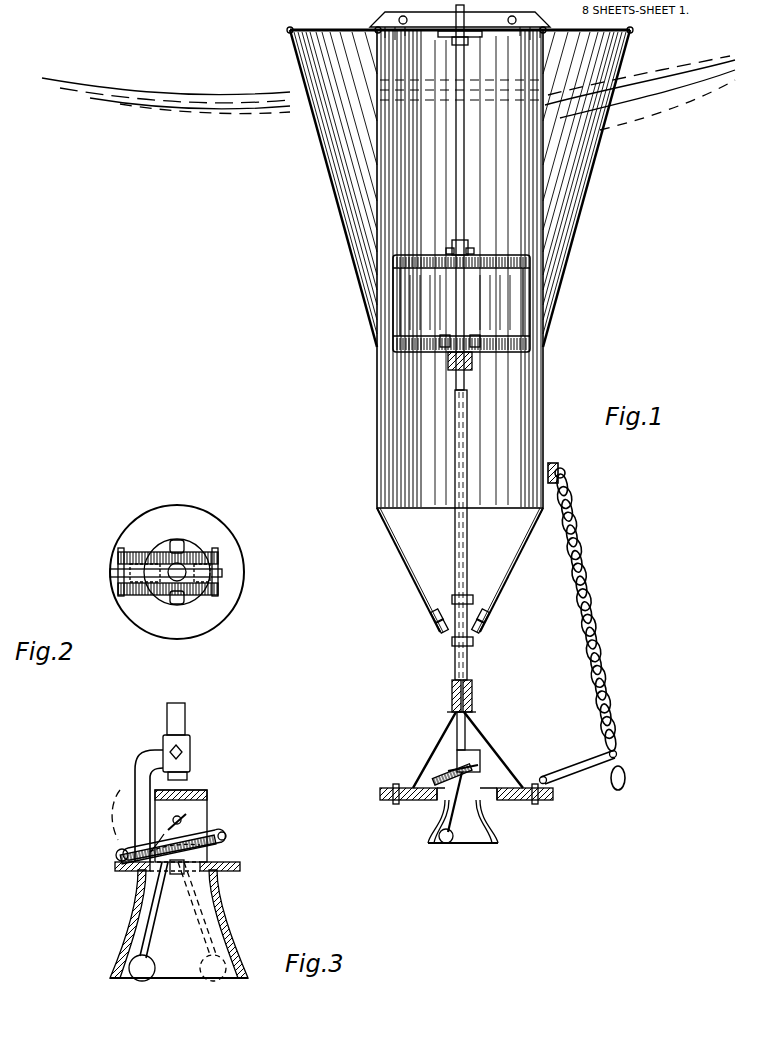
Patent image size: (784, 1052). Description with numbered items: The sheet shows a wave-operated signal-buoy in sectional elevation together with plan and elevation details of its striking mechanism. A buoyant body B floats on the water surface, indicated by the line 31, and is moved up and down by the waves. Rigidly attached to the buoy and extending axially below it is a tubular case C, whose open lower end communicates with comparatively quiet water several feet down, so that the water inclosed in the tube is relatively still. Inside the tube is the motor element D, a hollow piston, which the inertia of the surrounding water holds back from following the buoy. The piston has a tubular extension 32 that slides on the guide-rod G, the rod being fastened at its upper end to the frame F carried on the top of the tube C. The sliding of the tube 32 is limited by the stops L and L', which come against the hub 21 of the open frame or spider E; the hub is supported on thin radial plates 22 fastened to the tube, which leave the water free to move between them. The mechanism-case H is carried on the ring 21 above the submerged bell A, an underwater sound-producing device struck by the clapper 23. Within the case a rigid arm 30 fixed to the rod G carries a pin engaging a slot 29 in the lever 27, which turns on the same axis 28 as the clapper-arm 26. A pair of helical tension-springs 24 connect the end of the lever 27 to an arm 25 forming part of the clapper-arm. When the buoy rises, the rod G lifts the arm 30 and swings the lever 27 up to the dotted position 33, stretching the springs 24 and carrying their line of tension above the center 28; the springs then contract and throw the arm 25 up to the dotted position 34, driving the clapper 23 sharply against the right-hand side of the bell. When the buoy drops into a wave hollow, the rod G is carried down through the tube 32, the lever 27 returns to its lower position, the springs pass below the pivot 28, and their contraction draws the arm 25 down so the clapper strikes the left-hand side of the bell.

In FIG. 1, the water surface line 31 is at (160, 78).
In FIG. 1, the buoyant body B is at (592, 142).
In FIG. 1, the tubular case C is at (546, 428).
In FIG. 1, the frame F is at (470, 38).
In FIG. 1, the rod G is at (462, 138).
In FIG. 3, the rod G is at (185, 716).
In FIG. 1, the motor element D is at (525, 300).
In FIG. 1, the frame E is at (504, 585).
In FIG. 1, the radial plates 22 is at (400, 552).
In FIG. 1, the tubular extension 32 is at (468, 544).
In FIG. 1, the stop L' is at (472, 585).
In FIG. 1, the hub 21 is at (480, 630).
In FIG. 1, the stop L is at (476, 653).
In FIG. 1, the rigid arm 30 is at (444, 746).
In FIG. 3, the rigid arm 30 is at (135, 758).
In FIG. 1, the case H is at (482, 760).
In FIG. 3, the case H is at (200, 806).
In FIG. 1, the axis 28 is at (455, 768).
In FIG. 3, the axis 28 is at (177, 814).
In FIG. 1, the lever 27 is at (440, 774).
In FIG. 2, the lever 27 is at (110, 572).
In FIG. 3, the lever 27 is at (118, 852).
In FIG. 1, the arm 25 is at (484, 768).
In FIG. 3, the arm 25 is at (222, 836).
In FIG. 1, the underwater sound-producing device A is at (490, 814).
In FIG. 2, the underwater sound-producing device A is at (224, 606).
In FIG. 3, the underwater sound-producing device A is at (228, 926).
In FIG. 1, the clapper 23 is at (446, 844).
In FIG. 3, the clapper 23 is at (148, 980).
In FIG. 2, the helical tension-springs 24 is at (190, 548).
In FIG. 3, the helical tension-springs 24 is at (218, 845).
In FIG. 3, the upper position of lever 33 is at (134, 816).
In FIG. 3, the upper position of arm 34 is at (185, 818).
In FIG. 3, the slot 29 is at (150, 836).
In FIG. 3, the clapper-arm 26 is at (156, 900).